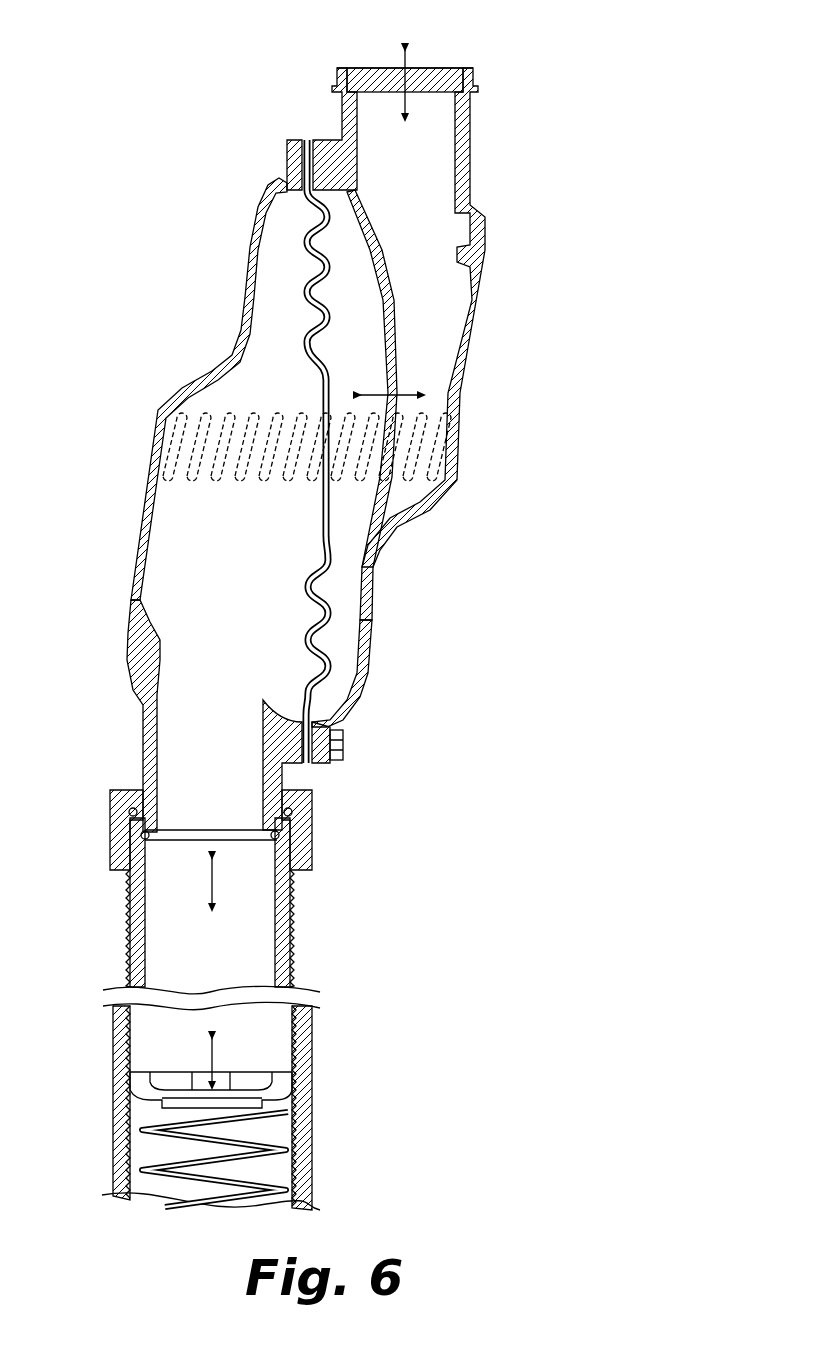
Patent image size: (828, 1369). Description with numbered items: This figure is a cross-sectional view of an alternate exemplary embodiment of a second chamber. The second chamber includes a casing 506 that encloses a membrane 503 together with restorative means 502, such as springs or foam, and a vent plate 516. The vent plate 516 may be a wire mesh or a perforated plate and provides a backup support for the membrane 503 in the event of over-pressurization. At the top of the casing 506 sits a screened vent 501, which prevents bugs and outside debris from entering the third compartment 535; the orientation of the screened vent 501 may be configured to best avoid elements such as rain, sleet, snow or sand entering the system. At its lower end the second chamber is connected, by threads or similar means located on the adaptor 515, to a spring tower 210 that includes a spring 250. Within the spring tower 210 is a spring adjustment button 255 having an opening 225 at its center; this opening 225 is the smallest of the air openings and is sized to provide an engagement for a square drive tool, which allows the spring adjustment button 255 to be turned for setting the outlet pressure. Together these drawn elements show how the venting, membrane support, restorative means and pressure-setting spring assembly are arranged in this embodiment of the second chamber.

The screened vent 501 is at (440, 68).
The casing 506 is at (342, 118).
The vent plate 516 is at (384, 259).
The membrane 503 is at (304, 294).
The restorative means 502 is at (363, 480).
The third compartment 535 is at (335, 490).
The adaptor 515 is at (291, 936).
The spring tower 210 is at (312, 1050).
The spring adjustment button 255 is at (290, 1082).
The opening 225 is at (222, 1078).
The spring 250 is at (140, 1167).